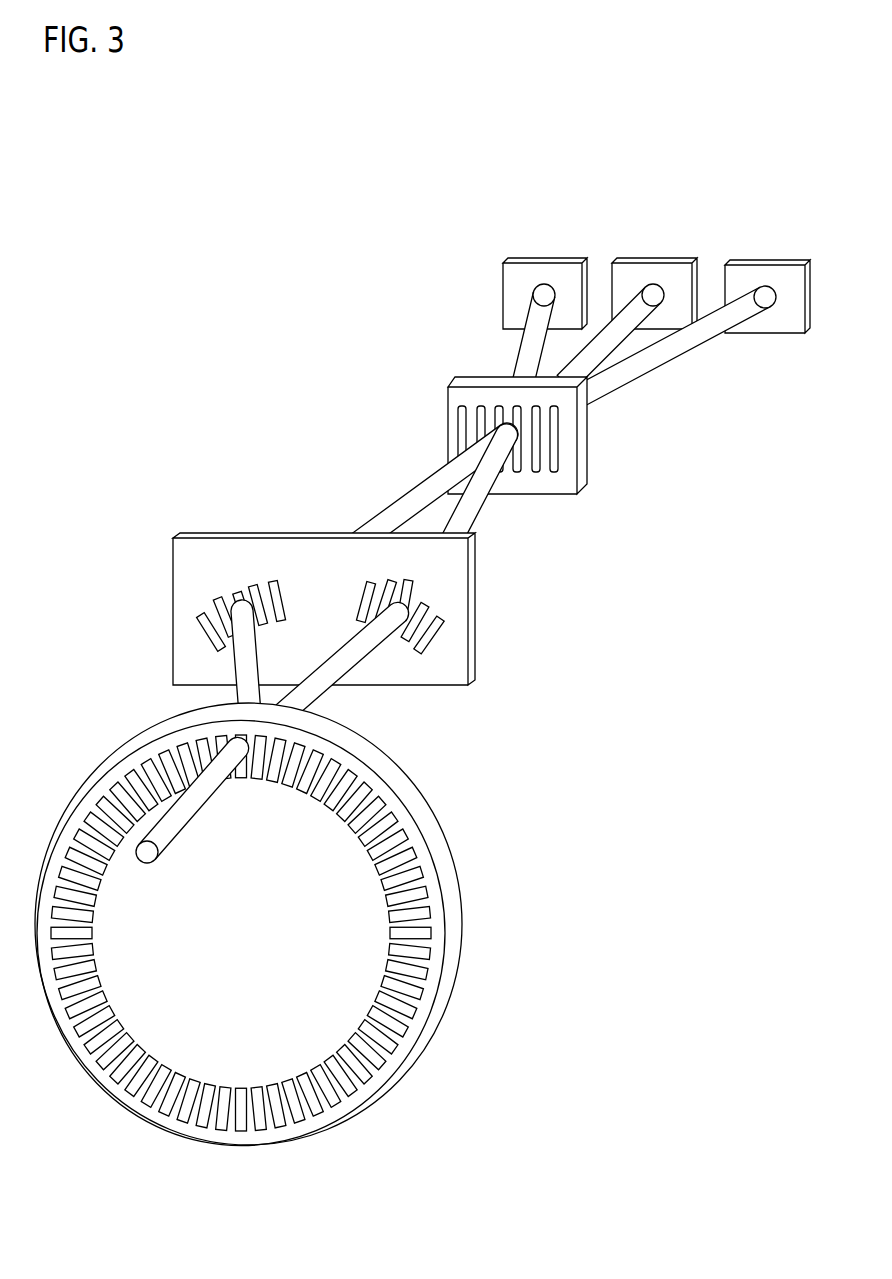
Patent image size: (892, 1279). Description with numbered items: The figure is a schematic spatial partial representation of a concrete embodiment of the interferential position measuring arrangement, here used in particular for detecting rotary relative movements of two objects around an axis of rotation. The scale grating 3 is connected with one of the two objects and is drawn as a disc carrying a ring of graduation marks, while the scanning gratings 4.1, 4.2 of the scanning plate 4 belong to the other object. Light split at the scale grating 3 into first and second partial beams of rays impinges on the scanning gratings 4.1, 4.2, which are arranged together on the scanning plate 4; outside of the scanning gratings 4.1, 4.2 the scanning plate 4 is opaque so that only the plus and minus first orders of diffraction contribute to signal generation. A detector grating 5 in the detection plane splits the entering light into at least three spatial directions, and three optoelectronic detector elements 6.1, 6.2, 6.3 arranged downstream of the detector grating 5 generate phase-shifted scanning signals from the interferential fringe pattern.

The scale grating 3 is at (125, 800).
The scanning plate 4 is at (192, 562).
The scanning grating 4.1 is at (251, 590).
The scanning grating 4.2 is at (425, 605).
The detector grating 5 is at (569, 468).
The optoelectronic detector element 6.1 is at (741, 280).
The optoelectronic detector element 6.2 is at (633, 280).
The optoelectronic detector element 6.3 is at (521, 278).